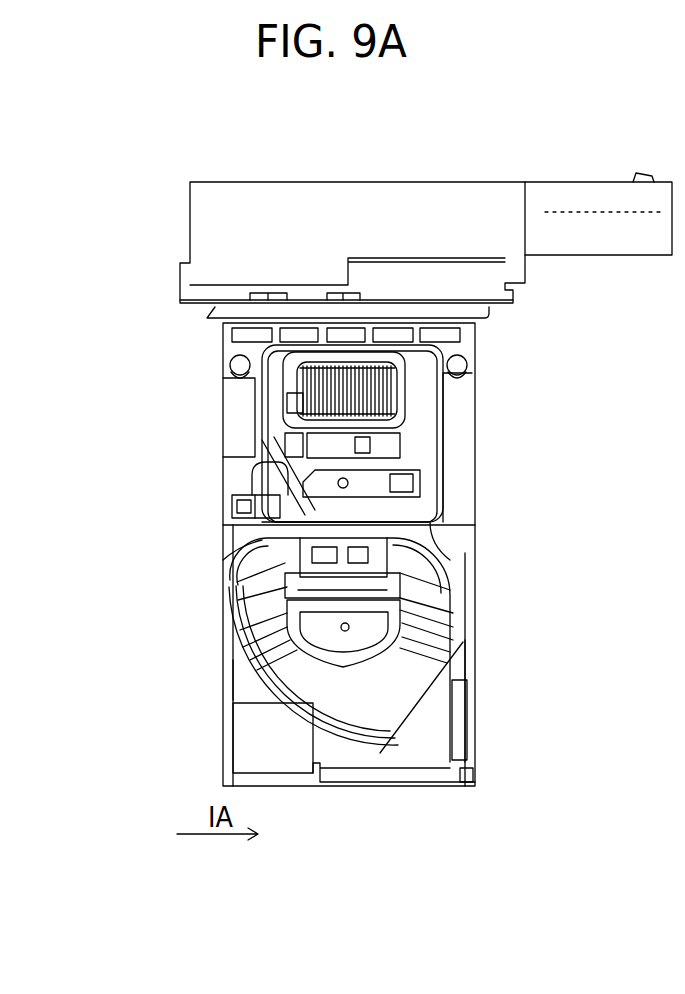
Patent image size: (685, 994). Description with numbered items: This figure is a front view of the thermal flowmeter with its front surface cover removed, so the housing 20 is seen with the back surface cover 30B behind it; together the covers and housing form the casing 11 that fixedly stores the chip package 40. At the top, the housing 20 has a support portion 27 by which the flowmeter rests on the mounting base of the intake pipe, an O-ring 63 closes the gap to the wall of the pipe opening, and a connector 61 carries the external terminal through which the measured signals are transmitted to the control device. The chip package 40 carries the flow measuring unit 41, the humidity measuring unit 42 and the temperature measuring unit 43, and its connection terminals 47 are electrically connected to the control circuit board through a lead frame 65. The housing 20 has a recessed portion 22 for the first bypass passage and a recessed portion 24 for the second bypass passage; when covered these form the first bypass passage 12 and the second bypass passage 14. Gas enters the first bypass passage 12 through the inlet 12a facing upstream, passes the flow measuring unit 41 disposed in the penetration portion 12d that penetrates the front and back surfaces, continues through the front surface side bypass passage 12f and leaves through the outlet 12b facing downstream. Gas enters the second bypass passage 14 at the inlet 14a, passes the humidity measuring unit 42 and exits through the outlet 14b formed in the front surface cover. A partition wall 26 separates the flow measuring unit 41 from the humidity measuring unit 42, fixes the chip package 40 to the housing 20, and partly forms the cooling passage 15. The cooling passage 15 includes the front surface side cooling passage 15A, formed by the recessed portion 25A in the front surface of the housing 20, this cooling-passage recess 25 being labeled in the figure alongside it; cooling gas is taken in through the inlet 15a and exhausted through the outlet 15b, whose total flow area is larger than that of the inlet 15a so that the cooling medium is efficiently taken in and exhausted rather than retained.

The casing 11 is at (568, 360).
The first bypass passage 12 is at (329, 663).
The inlet 12a is at (240, 750).
The outlet 12b is at (460, 720).
The penetration portion 12d is at (250, 548).
The front surface side bypass passage 12f is at (262, 660).
The second bypass passage 14 is at (365, 433).
The inlet 14a is at (262, 430).
The outlet 14b is at (410, 442).
The cooling passage 15 is at (418, 642).
The inlet 15a is at (300, 480).
The front surface side cooling passage 15A is at (305, 523).
The outlet 15b is at (440, 522).
The housing 20 is at (250, 408).
The recessed portion for the first bypass passage 22 is at (329, 663).
The recessed portion for the second bypass passage 24 is at (365, 433).
The lower housing unit 25 is at (418, 642).
The recessed portion for the front surface side cooling passage 25A is at (237, 527).
The partition wall 26 is at (272, 585).
The support portion 27 is at (317, 290).
The back surface cover 30B is at (242, 498).
The chip package 40 is at (440, 483).
The flow measuring unit 41 is at (445, 588).
The humidity measuring unit 42 is at (405, 468).
The temperature measuring unit 43 is at (217, 513).
The connection terminals 47 is at (400, 392).
The connector 61 is at (535, 210).
The O-ring 63 is at (207, 318).
The lead frame 65 is at (462, 368).